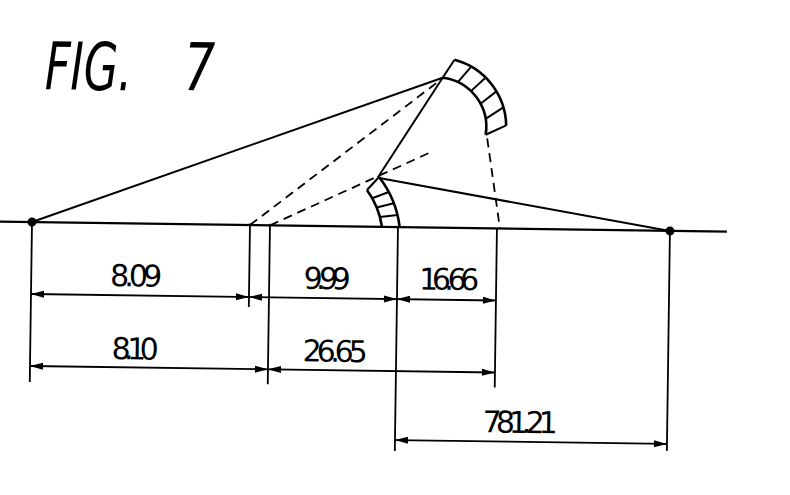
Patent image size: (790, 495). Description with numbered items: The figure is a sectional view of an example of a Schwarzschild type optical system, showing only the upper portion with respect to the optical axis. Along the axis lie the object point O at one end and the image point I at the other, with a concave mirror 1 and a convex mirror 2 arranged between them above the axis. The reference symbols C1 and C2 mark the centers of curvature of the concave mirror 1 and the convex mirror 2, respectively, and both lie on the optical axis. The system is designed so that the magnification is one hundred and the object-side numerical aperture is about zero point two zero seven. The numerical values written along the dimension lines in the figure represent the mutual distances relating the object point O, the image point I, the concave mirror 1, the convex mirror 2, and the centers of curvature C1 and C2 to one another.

The concave mirror 1 is at (484, 130).
The convex mirror 2 is at (395, 202).
The object point O is at (21, 239).
The image point I is at (681, 231).
The center of curvature of the concave mirror C1 is at (250, 222).
The center of curvature of the convex mirror C2 is at (270, 222).